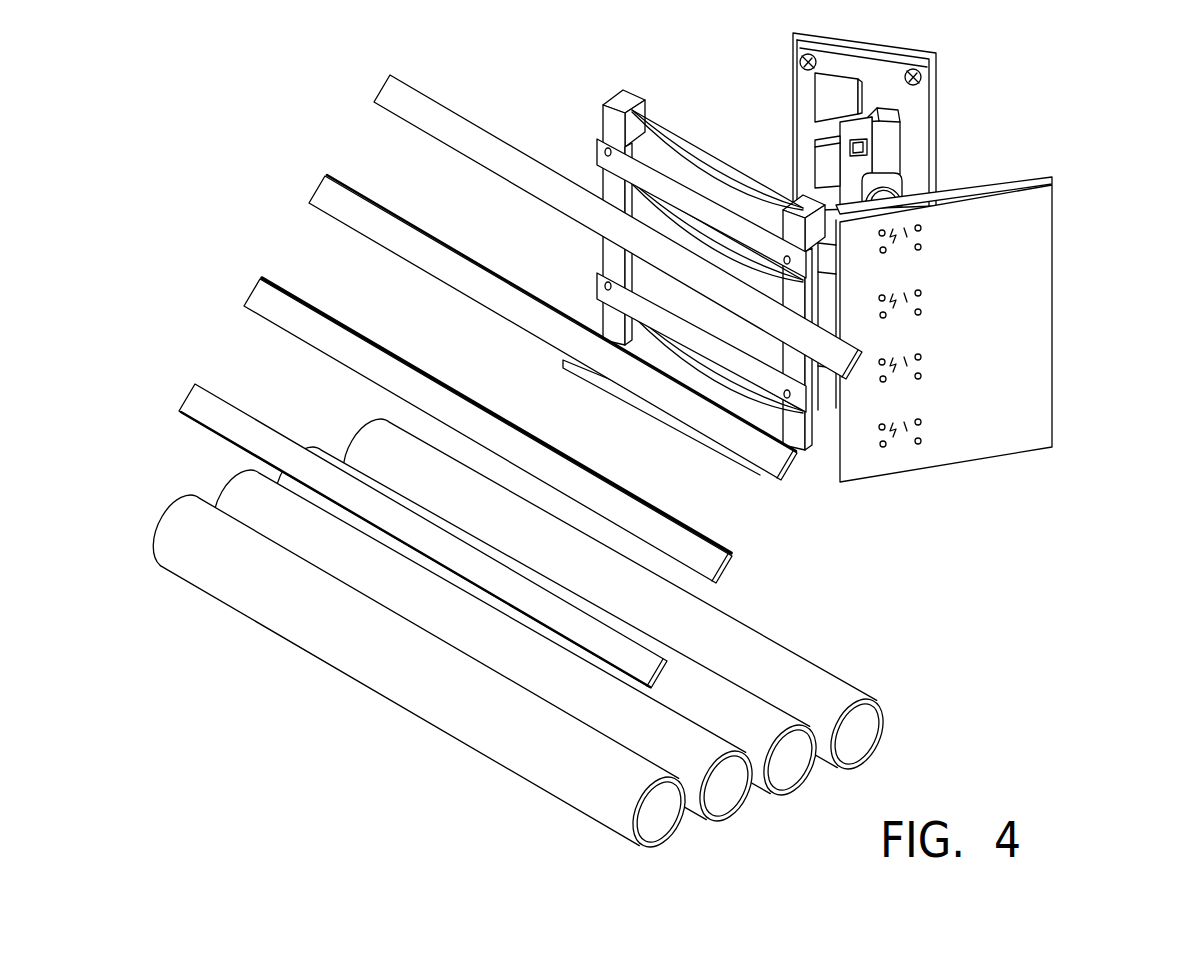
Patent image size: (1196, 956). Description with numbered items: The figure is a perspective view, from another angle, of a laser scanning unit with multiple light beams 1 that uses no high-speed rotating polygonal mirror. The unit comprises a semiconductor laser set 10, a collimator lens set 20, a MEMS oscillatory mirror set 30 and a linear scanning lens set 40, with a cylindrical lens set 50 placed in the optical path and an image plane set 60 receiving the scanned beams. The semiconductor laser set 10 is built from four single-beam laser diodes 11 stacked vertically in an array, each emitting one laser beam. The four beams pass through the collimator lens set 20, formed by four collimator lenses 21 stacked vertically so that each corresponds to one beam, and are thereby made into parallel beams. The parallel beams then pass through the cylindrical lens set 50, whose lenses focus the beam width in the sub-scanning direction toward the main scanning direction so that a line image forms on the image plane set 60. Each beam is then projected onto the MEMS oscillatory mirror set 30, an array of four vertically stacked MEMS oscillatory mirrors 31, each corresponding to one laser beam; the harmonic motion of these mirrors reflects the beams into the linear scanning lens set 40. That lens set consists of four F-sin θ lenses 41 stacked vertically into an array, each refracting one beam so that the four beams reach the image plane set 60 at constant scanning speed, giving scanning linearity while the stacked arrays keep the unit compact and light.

The laser scanning unit with multiple light beams 1 is at (666, 432).
The semiconductor laser set 10 is at (912, 215).
The single-beam laser diode 11 is at (919, 189).
The collimator lens set 20 is at (916, 199).
The collimator lens 21 is at (880, 172).
The MEMS oscillatory mirror set 30 is at (903, 42).
The MEMS oscillatory mirror 31 is at (826, 95).
The linear scanning lens set 40 is at (676, 260).
The F-sin θ lens 41 is at (665, 138).
The cylindrical lens set 50 is at (840, 122).
The image plane set 60 is at (318, 642).